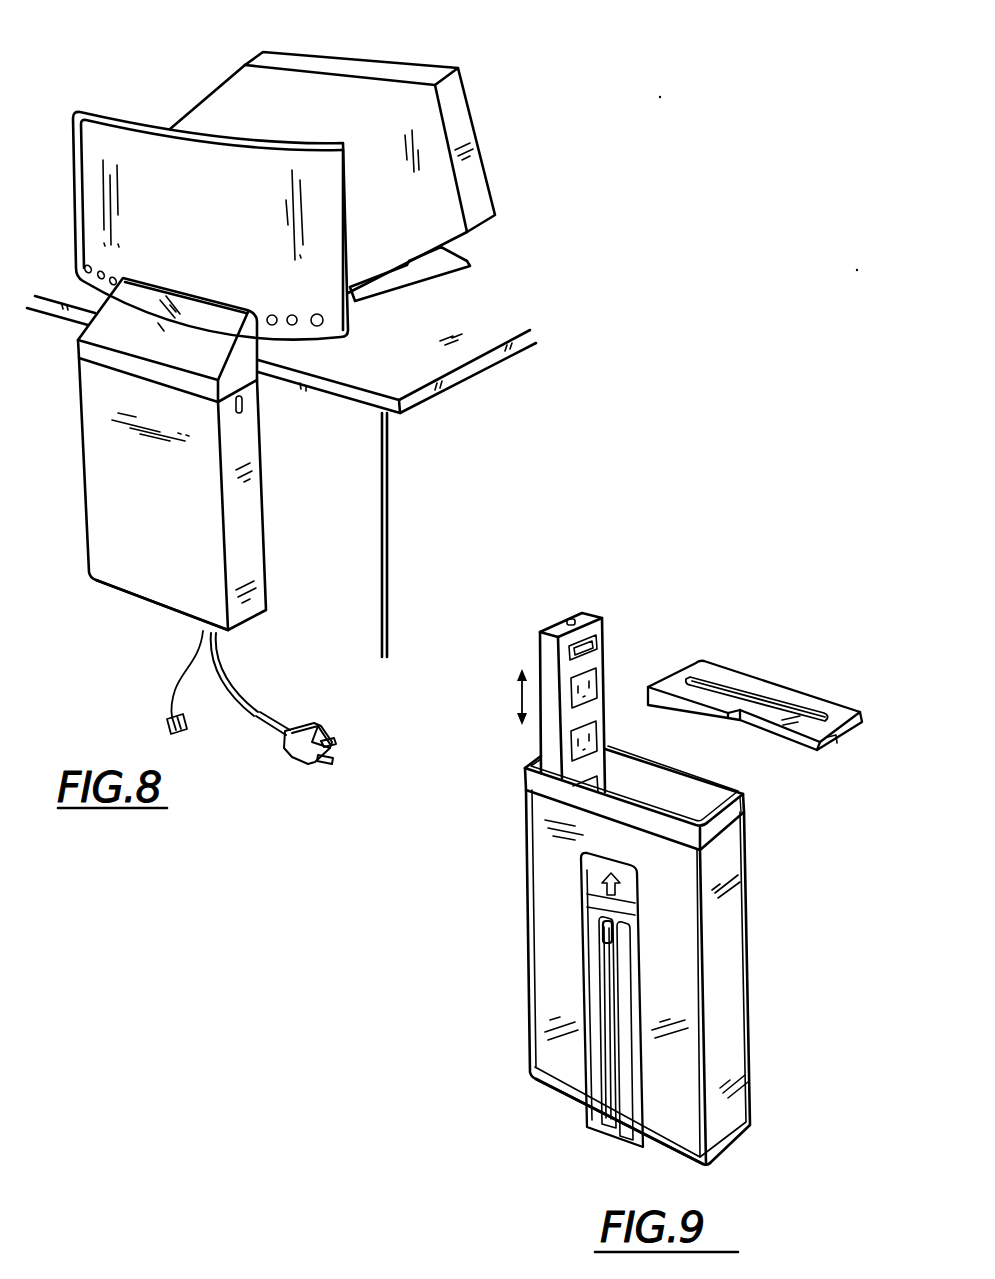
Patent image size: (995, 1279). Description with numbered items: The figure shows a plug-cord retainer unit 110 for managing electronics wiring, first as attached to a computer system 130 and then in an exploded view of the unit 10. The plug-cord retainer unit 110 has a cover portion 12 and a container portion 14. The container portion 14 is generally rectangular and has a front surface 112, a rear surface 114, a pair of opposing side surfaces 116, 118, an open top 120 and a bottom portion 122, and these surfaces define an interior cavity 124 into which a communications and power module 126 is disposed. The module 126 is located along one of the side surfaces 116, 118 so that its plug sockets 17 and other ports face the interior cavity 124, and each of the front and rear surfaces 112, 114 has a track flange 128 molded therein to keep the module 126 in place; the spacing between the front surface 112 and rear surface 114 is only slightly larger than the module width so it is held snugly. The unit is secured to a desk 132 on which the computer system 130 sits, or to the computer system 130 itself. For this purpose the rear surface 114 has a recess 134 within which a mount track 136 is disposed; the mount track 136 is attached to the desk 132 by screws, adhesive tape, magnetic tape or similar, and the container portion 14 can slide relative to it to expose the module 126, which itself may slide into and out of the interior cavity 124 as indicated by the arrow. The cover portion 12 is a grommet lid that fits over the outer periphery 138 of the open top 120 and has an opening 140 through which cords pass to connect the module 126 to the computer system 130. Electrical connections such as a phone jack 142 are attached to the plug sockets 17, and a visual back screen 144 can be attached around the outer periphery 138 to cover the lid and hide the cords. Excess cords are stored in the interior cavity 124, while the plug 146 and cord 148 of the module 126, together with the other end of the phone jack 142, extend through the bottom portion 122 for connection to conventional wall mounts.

In FIG. 9, the power strip housing apparatus 10 is at (778, 927).
In FIG. 9, the cover portion 12 is at (840, 737).
In FIG. 8, the container portion 14 is at (187, 506).
In FIG. 9, the container portion 14 is at (650, 941).
In FIG. 9, the plug sockets 17 is at (597, 682).
In FIG. 8, the plug-cord retainer unit 110 is at (68, 483).
In FIG. 8, the front surface 112 is at (149, 500).
In FIG. 9, the front surface 112 is at (713, 810).
In FIG. 9, the rear surface 114 is at (683, 972).
In FIG. 9, the side surface 116 is at (730, 902).
In FIG. 8, the side surface 118 is at (238, 575).
In FIG. 9, the side surface 118 is at (530, 764).
In FIG. 9, the open top 120 is at (643, 774).
In FIG. 8, the bottom portion 122 is at (128, 599).
In FIG. 9, the bottom portion 122 is at (558, 1093).
In FIG. 9, the interior cavity 124 is at (687, 798).
In FIG. 9, the communications and power module 126 is at (550, 702).
In FIG. 9, the track flange 128 is at (609, 769).
In FIG. 8, the computer system 130 is at (413, 232).
In FIG. 8, the desk 132 is at (440, 350).
In FIG. 9, the recess 134 is at (545, 979).
In FIG. 9, the mount track 136 is at (584, 910).
In FIG. 9, the outer periphery 138 is at (750, 813).
In FIG. 9, the opening 140 is at (783, 702).
In FIG. 8, the phone jack 142 is at (155, 724).
In FIG. 8, the visual back screen 144 is at (197, 360).
In FIG. 8, the plug 146 is at (318, 727).
In FIG. 8, the cord 148 is at (238, 693).